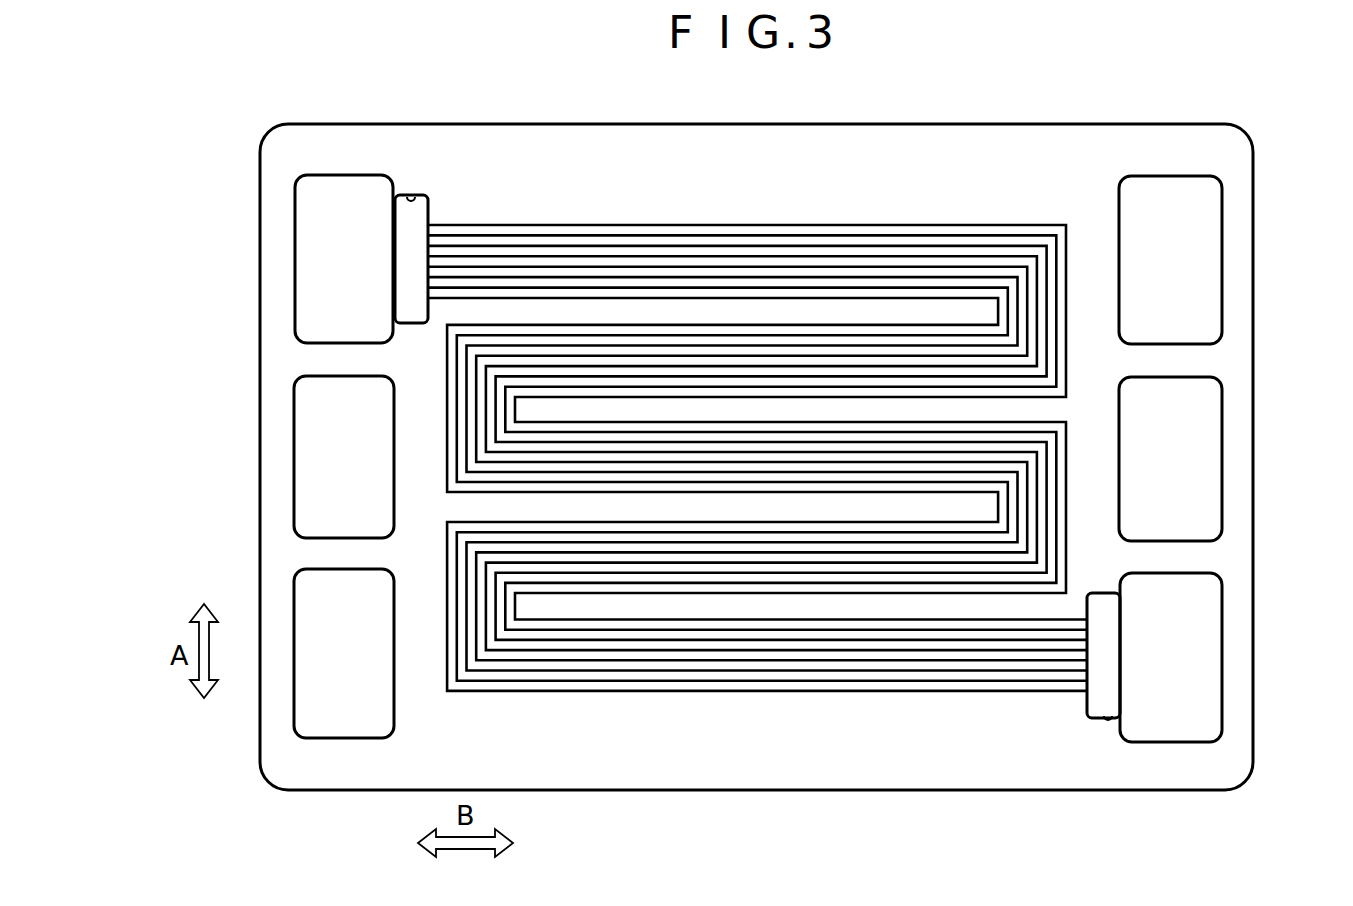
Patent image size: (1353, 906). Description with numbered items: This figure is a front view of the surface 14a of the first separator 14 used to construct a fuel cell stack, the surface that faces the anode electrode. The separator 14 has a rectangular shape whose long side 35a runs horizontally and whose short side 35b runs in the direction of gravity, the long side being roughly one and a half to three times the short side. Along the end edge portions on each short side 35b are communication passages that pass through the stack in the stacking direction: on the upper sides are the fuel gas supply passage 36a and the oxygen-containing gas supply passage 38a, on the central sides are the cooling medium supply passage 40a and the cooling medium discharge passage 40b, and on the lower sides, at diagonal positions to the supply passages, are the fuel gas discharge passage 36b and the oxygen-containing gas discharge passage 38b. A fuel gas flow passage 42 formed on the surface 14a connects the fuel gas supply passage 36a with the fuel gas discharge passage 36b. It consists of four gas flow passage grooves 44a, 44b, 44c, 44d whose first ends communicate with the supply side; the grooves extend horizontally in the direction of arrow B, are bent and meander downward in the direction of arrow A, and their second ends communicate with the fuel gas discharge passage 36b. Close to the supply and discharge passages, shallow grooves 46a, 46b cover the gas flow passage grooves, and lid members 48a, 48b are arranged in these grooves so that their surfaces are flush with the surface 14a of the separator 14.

The first separator 14 is at (915, 124).
The surface of the first separator 14a is at (510, 140).
The long side 35a is at (1052, 124).
The short side 35b is at (260, 467).
The fuel gas supply passage 36a is at (316, 278).
The fuel gas discharge passage 36b is at (1143, 676).
The oxygen-containing gas supply passage 38a is at (1142, 278).
The oxygen-containing gas discharge passage 38b is at (316, 671).
The cooling medium supply passage 40a is at (316, 476).
The cooling medium discharge passage 40b is at (1142, 476).
The fuel gas flow passage 42 is at (757, 383).
The gas flow passage groove 44a is at (490, 228).
The gas flow passage groove 44b is at (567, 242).
The gas flow passage groove 44c is at (646, 270).
The gas flow passage groove 44d is at (826, 213).
The groove 46a is at (411, 197).
The groove 46b is at (1108, 716).
The lid member 48a is at (413, 323).
The lid member 48b is at (1107, 622).